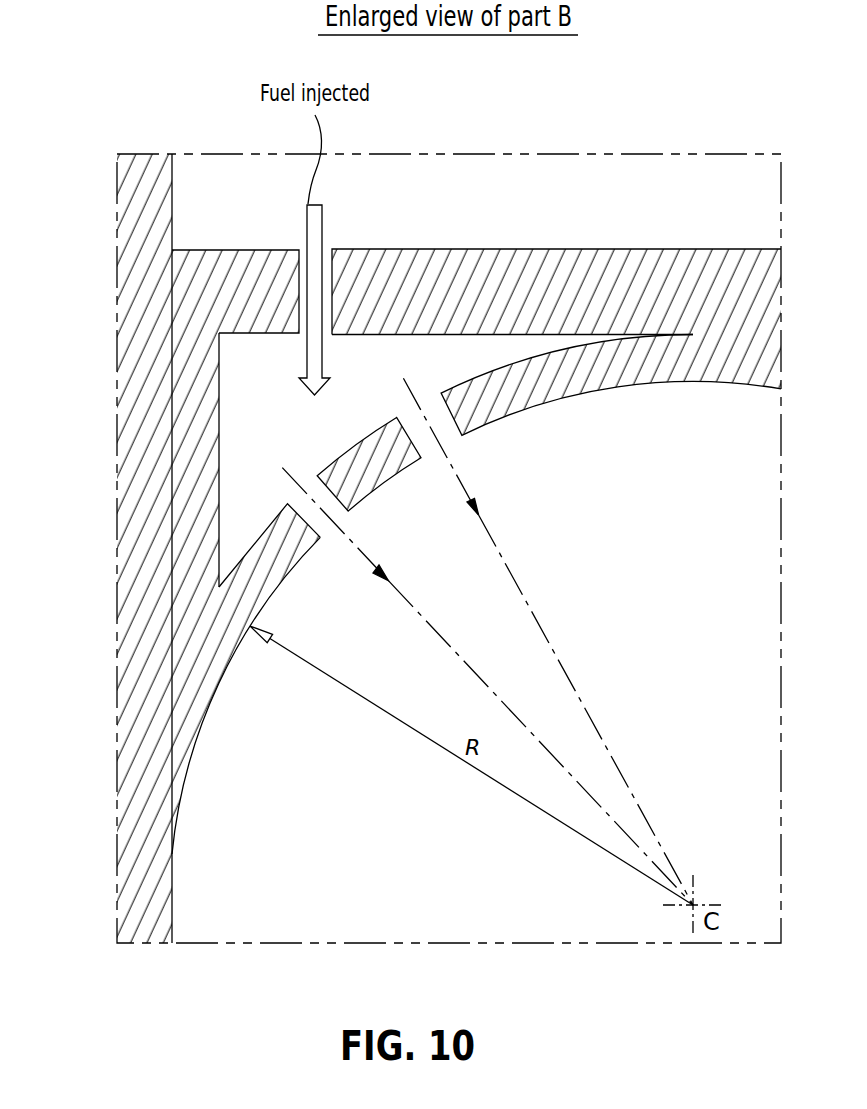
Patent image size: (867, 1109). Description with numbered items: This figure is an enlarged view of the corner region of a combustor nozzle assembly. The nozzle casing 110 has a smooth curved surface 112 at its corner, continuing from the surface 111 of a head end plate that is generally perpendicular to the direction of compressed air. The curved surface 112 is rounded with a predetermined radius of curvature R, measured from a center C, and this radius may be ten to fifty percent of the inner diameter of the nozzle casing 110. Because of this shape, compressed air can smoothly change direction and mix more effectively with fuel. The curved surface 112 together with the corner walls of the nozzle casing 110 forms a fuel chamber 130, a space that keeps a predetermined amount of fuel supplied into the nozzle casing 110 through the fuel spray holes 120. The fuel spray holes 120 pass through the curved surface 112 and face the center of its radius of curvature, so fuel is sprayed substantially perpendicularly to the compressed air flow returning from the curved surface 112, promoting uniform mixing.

The nozzle casing 110 is at (503, 268).
The surface of head end plate 111 is at (172, 900).
The curved surface 112 is at (282, 580).
The fuel spray holes 120 is at (333, 510).
The fuel chamber 130 is at (233, 422).